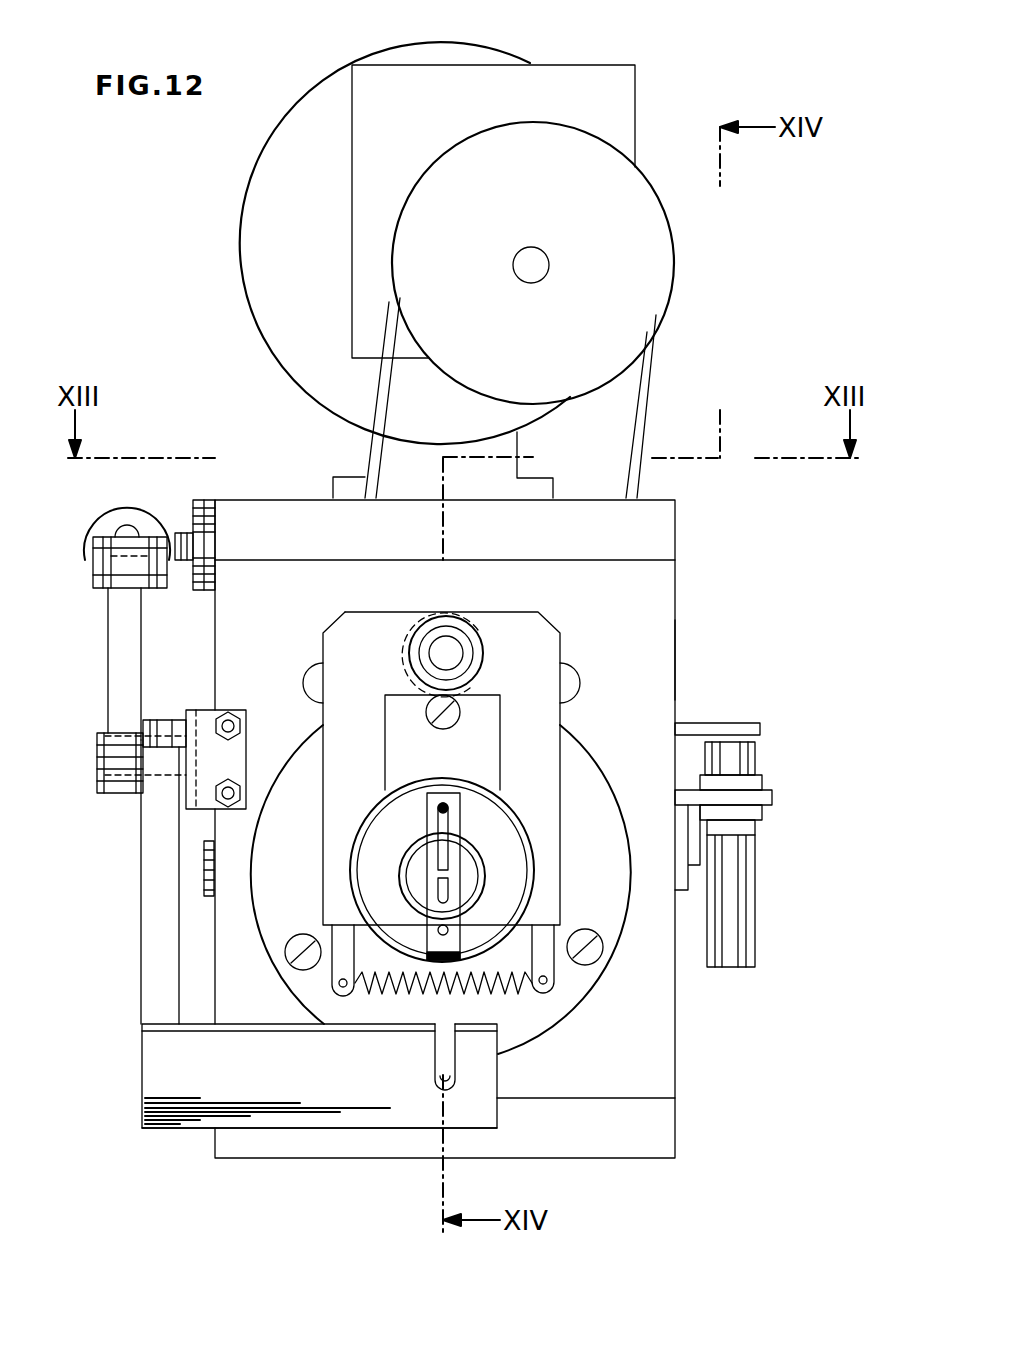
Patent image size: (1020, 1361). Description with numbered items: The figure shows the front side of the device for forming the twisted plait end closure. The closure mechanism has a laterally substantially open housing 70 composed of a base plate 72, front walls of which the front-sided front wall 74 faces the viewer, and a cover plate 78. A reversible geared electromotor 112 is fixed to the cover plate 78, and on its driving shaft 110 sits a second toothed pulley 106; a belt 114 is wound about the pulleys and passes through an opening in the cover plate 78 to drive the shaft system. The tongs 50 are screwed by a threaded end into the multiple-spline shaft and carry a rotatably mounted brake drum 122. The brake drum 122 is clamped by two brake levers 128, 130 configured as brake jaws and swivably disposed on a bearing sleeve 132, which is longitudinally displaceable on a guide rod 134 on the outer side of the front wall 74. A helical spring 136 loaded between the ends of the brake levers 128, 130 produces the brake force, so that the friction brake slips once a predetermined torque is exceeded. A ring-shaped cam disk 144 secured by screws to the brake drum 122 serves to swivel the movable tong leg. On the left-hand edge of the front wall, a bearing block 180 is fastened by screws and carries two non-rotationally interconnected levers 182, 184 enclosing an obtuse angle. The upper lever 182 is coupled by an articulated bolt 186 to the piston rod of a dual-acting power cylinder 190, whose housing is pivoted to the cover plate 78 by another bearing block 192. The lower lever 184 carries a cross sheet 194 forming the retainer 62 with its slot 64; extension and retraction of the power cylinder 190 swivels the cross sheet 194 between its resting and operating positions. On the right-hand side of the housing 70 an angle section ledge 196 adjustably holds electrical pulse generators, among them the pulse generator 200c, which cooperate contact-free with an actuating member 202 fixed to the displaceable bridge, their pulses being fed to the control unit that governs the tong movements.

The tongs 50 is at (455, 863).
The retainer 62 is at (170, 1141).
The slot 64 is at (436, 1062).
The housing 70 is at (683, 608).
The base plate 72 is at (665, 1128).
The front wall 74 is at (665, 656).
The cover plate 78 is at (663, 528).
The second toothed pulley 106 is at (665, 255).
The driving shaft 110 is at (528, 256).
The reversible geared electromotor 112 is at (240, 244).
The belt 114 is at (652, 380).
The brake drum 122 is at (352, 842).
The brake lever 128 is at (545, 718).
The brake lever 130 is at (337, 723).
The bearing sleeve 132 is at (428, 636).
The guide rod 134 is at (452, 642).
The helical spring 136 is at (480, 993).
The cam disk 144 is at (372, 876).
The bearing block 180 is at (192, 712).
The upper lever 182 is at (106, 693).
The lower lever 184 is at (148, 885).
The articulated bolt 186 is at (92, 569).
The dual-acting power cylinder 190 is at (104, 522).
The bearing block 192 is at (211, 500).
The cross sheet 194 is at (142, 1060).
The angle section ledge 196 is at (775, 797).
The electrical pulse generator 200c is at (740, 905).
The actuating member 202 is at (728, 722).